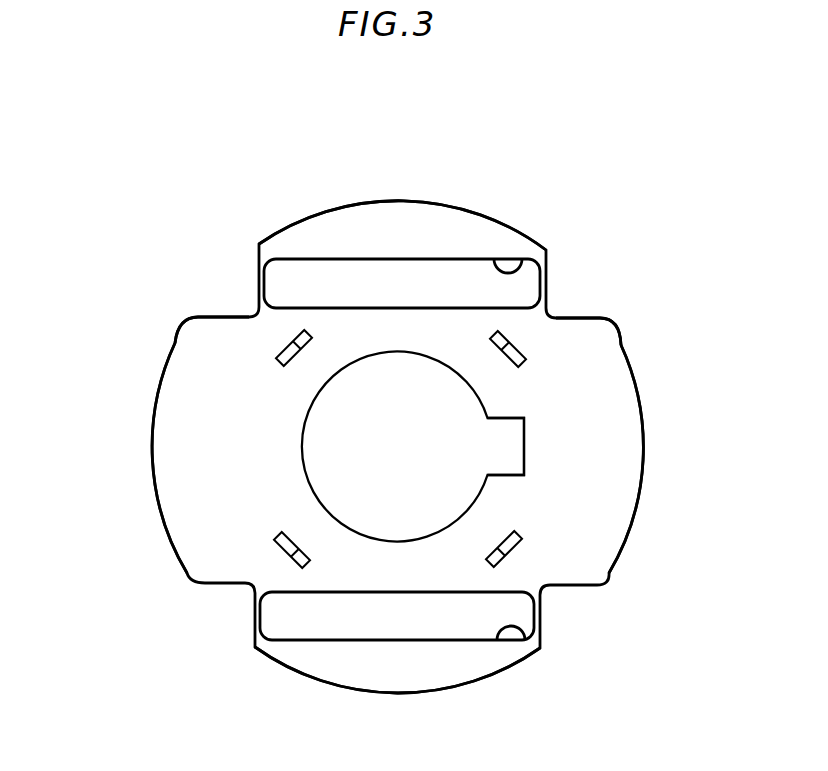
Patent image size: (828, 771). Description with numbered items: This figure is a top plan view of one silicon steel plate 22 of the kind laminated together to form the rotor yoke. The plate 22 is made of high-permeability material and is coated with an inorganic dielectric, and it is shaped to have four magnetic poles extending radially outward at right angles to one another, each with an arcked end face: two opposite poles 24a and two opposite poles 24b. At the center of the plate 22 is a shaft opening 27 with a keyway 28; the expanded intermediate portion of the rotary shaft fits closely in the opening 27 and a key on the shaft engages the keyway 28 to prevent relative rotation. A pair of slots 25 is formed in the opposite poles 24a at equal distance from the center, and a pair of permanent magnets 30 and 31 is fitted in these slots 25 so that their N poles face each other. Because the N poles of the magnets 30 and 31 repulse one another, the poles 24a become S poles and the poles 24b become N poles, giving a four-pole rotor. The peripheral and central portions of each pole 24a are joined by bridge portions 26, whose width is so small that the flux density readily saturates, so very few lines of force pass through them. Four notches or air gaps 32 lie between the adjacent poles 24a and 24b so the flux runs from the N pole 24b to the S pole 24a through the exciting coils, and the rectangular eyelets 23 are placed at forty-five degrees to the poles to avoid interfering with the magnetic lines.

The silicon steel plate 22 is at (170, 352).
The rectangular eyelet 23 is at (303, 344).
The magnetic pole 24a is at (484, 216).
The magnetic pole 24b is at (160, 440).
The slot 25 is at (527, 260).
The bridge portion 26 is at (258, 283).
The shaft opening 27 is at (424, 366).
The keyway 28 is at (515, 418).
The permanent magnet 30 is at (371, 270).
The permanent magnet 31 is at (387, 622).
The notch or air gap 32 is at (234, 316).